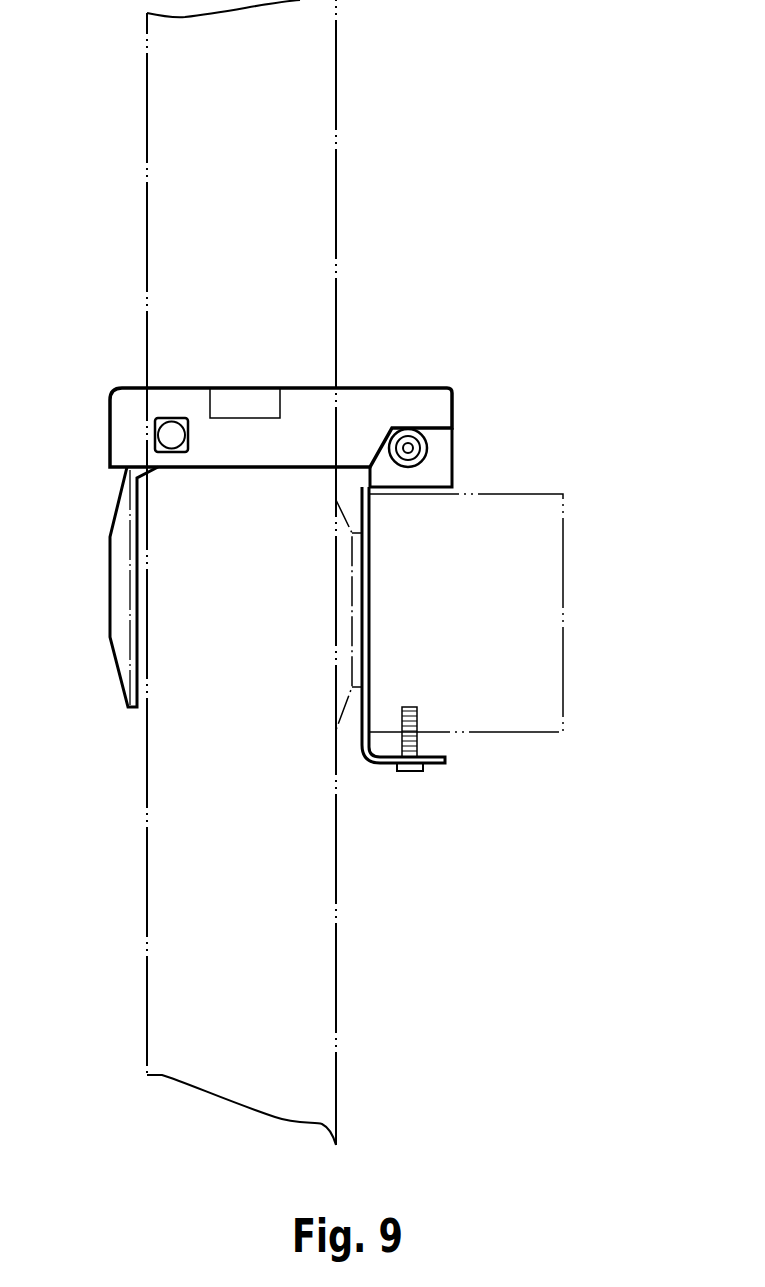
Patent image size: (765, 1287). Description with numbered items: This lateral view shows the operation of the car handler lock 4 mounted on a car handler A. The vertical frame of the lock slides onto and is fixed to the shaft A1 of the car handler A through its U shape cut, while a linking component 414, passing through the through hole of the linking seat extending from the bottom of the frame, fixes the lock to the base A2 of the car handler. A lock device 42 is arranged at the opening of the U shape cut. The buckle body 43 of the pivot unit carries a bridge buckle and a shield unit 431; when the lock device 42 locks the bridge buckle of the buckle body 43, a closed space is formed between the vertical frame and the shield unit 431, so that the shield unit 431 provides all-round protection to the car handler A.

The car handler A is at (323, 205).
The shaft of the car handler A1 is at (358, 643).
The base of the car handler A2 is at (553, 652).
The car handler lock 4 is at (441, 348).
The buckle body 43 is at (123, 403).
The lock device 42 is at (440, 455).
The shield unit 431 is at (128, 708).
The linking component 414 is at (410, 772).